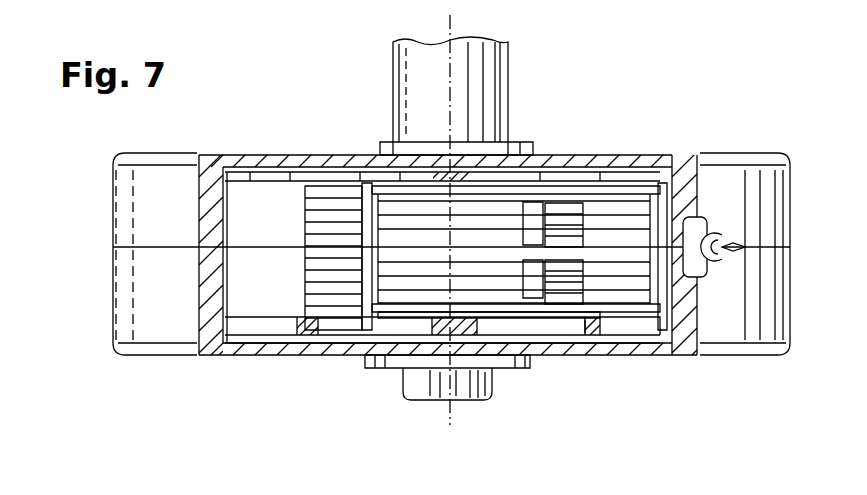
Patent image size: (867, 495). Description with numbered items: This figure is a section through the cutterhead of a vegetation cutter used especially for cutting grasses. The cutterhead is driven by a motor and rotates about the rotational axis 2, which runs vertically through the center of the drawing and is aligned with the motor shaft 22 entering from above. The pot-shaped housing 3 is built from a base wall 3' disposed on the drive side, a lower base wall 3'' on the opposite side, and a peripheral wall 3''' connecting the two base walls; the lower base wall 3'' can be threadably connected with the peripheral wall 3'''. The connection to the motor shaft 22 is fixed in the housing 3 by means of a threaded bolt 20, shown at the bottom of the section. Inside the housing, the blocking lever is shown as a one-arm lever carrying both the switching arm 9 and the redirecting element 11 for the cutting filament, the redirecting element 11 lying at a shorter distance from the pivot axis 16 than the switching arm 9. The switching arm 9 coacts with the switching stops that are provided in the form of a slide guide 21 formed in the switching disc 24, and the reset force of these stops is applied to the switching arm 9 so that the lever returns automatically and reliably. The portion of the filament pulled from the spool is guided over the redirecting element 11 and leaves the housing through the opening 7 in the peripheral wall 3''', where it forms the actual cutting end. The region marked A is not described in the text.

The rotational axis 2 is at (452, 32).
The pot-shaped housing 3 is at (451, 218).
The base wall 3' is at (435, 228).
The lower base wall 3'' is at (448, 387).
The peripheral wall 3''' is at (713, 228).
The opening 7 is at (722, 258).
The switching arm 9 is at (365, 272).
The redirecting element 11 is at (532, 200).
The working chamber A is at (532, 215).
The pivot axis 16 is at (662, 160).
The threaded bolt 20 is at (456, 396).
The slide guide 21 is at (352, 330).
The motor shaft 22 is at (492, 108).
The switching disc 24 is at (590, 320).